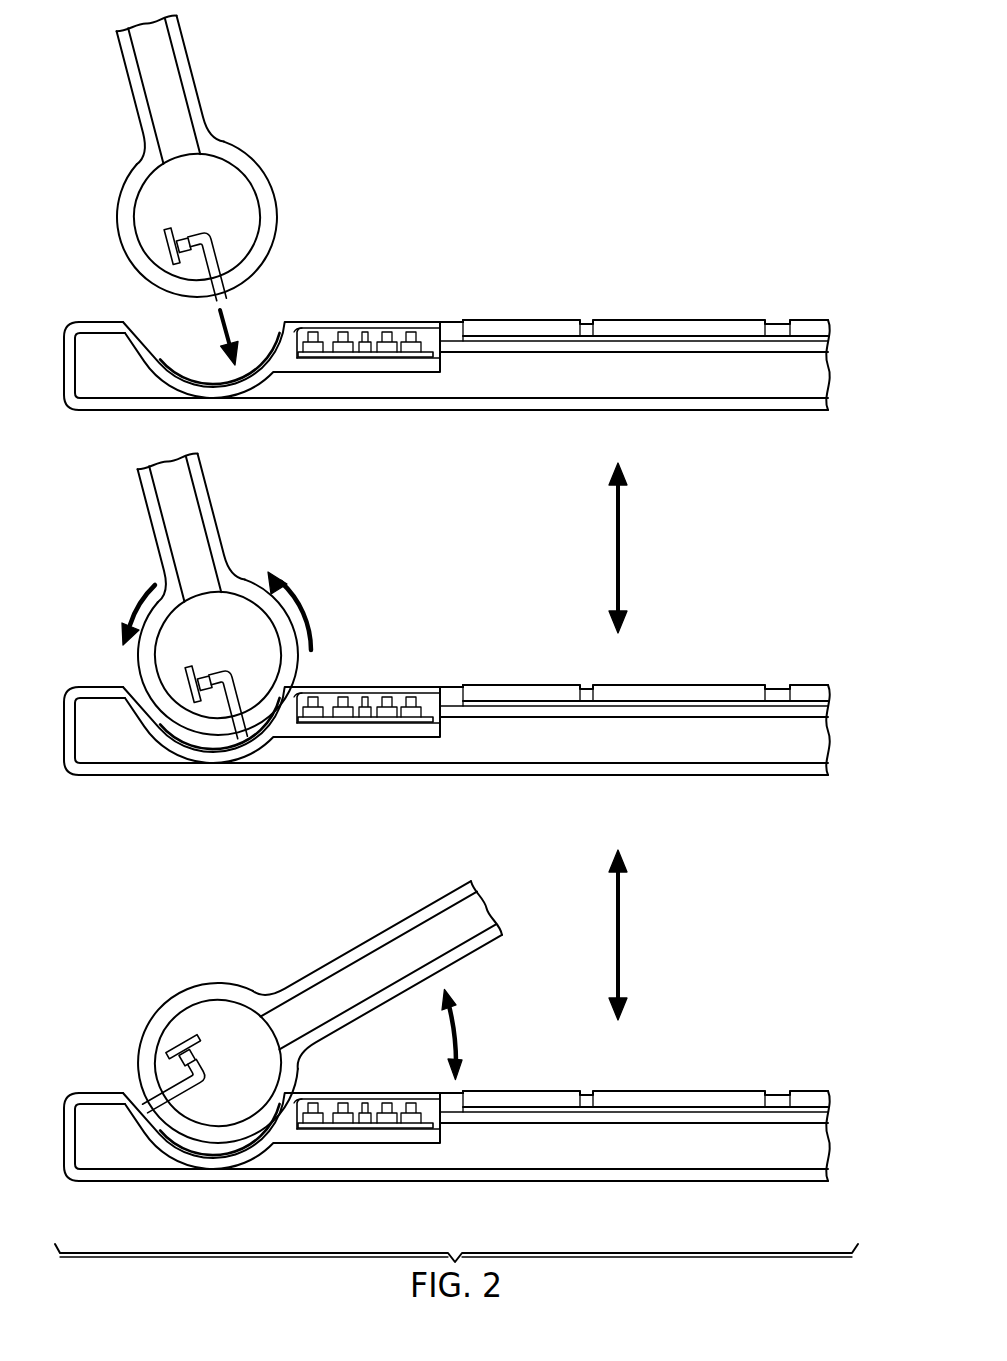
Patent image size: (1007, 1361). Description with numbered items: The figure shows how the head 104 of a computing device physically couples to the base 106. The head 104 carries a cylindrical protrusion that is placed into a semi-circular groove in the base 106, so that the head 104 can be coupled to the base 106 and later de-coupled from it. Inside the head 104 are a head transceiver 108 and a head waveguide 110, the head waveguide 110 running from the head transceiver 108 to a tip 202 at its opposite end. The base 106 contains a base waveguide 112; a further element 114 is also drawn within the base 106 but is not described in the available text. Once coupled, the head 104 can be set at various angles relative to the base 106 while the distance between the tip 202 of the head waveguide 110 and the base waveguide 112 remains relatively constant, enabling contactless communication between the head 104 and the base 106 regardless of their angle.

The head 104 is at (126, 88).
The base 106 is at (493, 406).
The head transceiver 108 is at (145, 262).
The head waveguide 110 is at (210, 237).
The base waveguide 112 is at (283, 328).
The printed circuit board 114 is at (350, 360).
The tip 202 is at (208, 321).